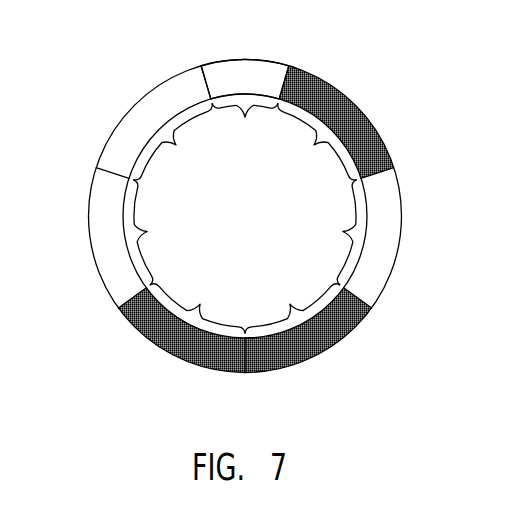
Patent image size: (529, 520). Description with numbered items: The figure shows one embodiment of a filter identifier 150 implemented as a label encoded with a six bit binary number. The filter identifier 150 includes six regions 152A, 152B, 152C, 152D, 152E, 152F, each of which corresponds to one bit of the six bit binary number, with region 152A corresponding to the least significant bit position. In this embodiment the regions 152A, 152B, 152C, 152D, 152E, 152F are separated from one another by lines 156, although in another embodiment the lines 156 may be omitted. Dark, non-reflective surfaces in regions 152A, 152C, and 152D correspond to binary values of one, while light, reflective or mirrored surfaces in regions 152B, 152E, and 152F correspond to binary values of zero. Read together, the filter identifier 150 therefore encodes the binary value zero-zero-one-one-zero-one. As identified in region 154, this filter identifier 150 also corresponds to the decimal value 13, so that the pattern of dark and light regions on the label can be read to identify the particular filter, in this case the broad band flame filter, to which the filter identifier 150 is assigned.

The filter identifier 150 is at (104, 44).
The decimal value 13 is at (245, 79).
The region 154 is at (245, 128).
The region 152A is at (317, 142).
The region 152B is at (323, 232).
The region 152C is at (292, 302).
The region 152D is at (197, 302).
The region 152E is at (167, 232).
The region 152F is at (176, 142).
The lines 156 is at (197, 77).